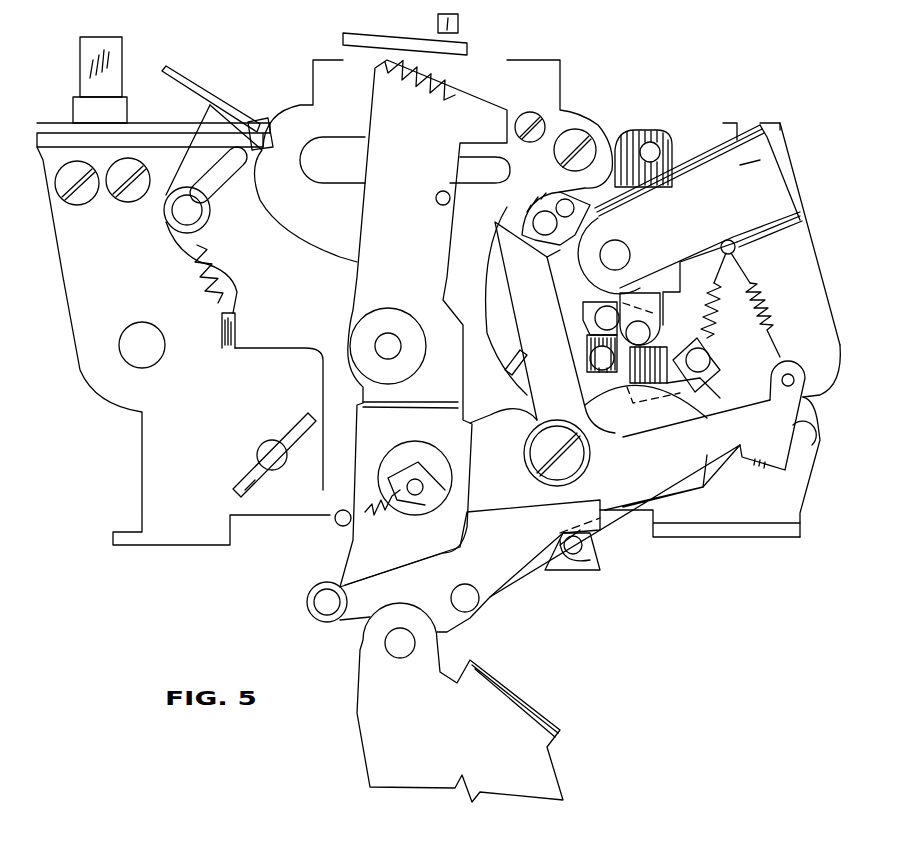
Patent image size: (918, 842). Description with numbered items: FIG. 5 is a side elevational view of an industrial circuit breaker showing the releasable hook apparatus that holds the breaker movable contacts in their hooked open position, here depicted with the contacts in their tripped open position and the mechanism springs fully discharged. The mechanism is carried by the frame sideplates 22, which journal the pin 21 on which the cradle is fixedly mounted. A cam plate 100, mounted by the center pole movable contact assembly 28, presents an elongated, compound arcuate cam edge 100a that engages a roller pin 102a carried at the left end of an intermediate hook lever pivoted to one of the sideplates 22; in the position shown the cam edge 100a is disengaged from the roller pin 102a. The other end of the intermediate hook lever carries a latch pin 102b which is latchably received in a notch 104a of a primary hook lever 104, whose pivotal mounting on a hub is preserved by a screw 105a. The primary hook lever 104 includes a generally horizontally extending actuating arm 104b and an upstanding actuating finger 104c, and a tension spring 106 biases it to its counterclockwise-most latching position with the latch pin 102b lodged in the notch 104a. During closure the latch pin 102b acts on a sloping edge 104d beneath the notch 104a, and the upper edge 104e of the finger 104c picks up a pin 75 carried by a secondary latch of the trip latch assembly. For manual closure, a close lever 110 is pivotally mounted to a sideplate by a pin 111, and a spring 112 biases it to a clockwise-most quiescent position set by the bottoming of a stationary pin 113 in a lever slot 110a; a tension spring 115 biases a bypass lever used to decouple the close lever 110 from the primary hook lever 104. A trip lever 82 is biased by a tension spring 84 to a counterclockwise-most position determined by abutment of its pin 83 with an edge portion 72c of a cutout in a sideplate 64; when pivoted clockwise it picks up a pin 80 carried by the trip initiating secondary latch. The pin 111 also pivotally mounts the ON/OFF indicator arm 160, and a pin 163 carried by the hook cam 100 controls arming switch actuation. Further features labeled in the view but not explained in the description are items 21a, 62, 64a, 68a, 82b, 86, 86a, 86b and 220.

The mechanism frame sideplates 22 is at (217, 419).
The pin 21 is at (270, 447).
The pin bar 21a is at (253, 482).
The center pole movable contact assembly 28 is at (378, 732).
The pivot 62 is at (617, 247).
The sideplate 64 is at (803, 272).
The link plate tab 64a is at (617, 133).
The lever tab 68a is at (598, 368).
The edge portion of cutout 72c is at (706, 370).
The pin 75 is at (530, 230).
The pin 80 is at (603, 320).
The trip lever 82 is at (688, 211).
The link arm edge 82b is at (757, 170).
The pin 83 is at (695, 350).
The tension spring 84 is at (720, 280).
The latch member 86 is at (670, 280).
The latch member arm 86a is at (680, 383).
The latch member wedge 86b is at (558, 257).
The cam plate 100 is at (510, 566).
The compound arcuate cam edge 100a is at (500, 505).
The roller pin 102a is at (325, 605).
The latch pin 102b is at (583, 545).
The primary hook lever 104 is at (640, 475).
The notch 104a is at (565, 540).
The actuating arm 104b is at (720, 443).
The actuating finger 104c is at (503, 247).
The sloping edge 104d is at (592, 588).
The upper edge 104e is at (507, 200).
The screw 105a is at (540, 447).
The tension spring 106 is at (763, 310).
The close lever 110 is at (296, 284).
The lever slot 110a is at (227, 187).
The pin 111 is at (385, 345).
The spring 112 is at (200, 278).
The stationary pin 113 is at (165, 228).
The tension spring 115 is at (370, 510).
The ON/OFF indicator arm 160 is at (425, 240).
The pin 163 is at (473, 604).
The pin 220 is at (618, 378).